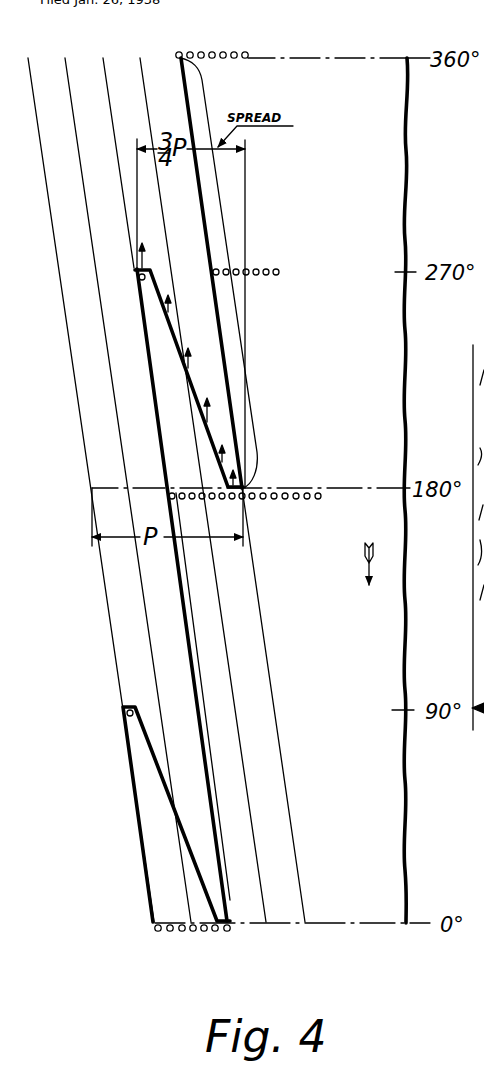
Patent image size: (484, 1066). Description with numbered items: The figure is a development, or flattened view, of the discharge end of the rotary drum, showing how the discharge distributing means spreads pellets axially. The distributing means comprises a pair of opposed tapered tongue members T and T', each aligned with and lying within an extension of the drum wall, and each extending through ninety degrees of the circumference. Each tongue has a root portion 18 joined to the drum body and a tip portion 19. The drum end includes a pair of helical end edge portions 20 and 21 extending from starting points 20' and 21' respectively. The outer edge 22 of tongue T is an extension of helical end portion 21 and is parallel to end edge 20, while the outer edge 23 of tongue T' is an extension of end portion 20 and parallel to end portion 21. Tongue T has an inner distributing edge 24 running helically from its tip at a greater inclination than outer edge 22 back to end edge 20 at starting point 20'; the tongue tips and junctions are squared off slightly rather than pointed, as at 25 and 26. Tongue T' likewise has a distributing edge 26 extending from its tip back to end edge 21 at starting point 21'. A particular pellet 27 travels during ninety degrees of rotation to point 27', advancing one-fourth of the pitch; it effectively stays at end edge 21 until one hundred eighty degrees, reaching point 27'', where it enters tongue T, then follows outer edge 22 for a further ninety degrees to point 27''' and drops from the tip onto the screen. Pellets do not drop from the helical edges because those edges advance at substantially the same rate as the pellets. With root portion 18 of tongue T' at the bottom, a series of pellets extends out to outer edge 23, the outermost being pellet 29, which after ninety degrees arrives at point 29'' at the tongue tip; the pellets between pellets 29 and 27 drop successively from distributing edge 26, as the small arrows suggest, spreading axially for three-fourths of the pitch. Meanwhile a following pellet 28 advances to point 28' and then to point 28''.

The root portion 18 is at (183, 453).
The tip portion 19 is at (148, 306).
The helical end edge portion 20 is at (194, 595).
The starting point 20' is at (298, 891).
The helical end edge portion 21 is at (237, 273).
The starting point 21' is at (287, 466).
The outer edge 22 is at (147, 850).
The outer edge 23 is at (156, 411).
The distributing edge 24 is at (174, 806).
The squared-off tip 25 is at (126, 705).
The distributing edge 26 is at (221, 918).
The pellet 27 is at (240, 522).
The pellet position 27' is at (256, 243).
The pellet position 27'' is at (199, 495).
The pellet position 27''' is at (91, 720).
The pellet 28 is at (312, 518).
The pellet position 28' is at (312, 256).
The pellet position 28'' is at (276, 493).
The pellet 29 is at (154, 509).
The pellet position 29'' is at (103, 276).
The tapered tongue member T is at (147, 814).
The tapered tongue member T' is at (164, 378).